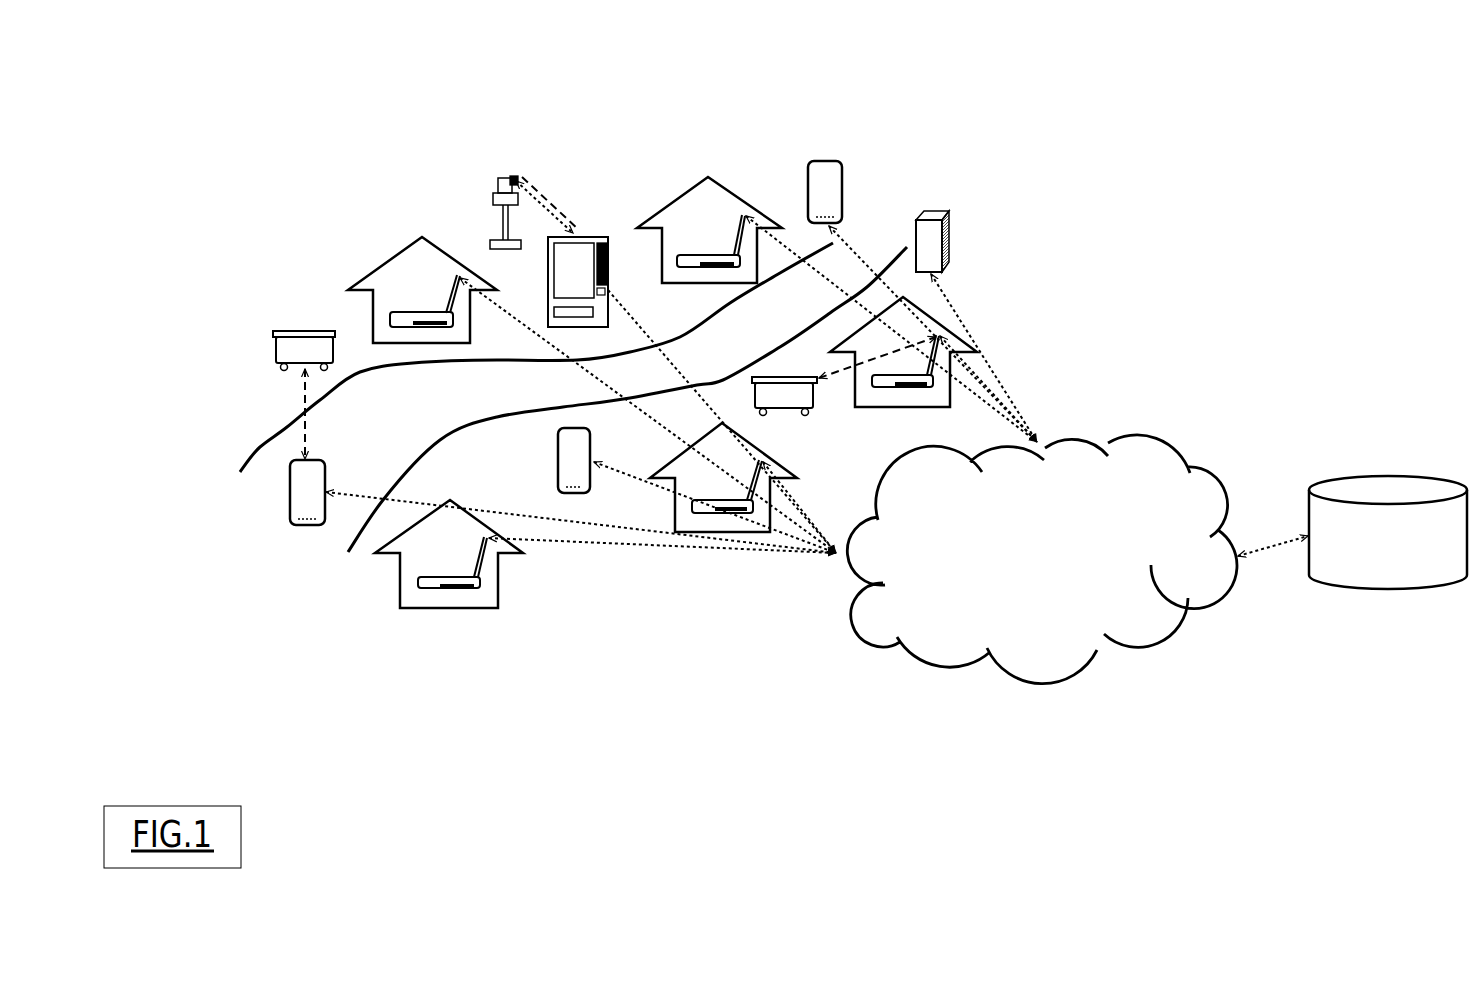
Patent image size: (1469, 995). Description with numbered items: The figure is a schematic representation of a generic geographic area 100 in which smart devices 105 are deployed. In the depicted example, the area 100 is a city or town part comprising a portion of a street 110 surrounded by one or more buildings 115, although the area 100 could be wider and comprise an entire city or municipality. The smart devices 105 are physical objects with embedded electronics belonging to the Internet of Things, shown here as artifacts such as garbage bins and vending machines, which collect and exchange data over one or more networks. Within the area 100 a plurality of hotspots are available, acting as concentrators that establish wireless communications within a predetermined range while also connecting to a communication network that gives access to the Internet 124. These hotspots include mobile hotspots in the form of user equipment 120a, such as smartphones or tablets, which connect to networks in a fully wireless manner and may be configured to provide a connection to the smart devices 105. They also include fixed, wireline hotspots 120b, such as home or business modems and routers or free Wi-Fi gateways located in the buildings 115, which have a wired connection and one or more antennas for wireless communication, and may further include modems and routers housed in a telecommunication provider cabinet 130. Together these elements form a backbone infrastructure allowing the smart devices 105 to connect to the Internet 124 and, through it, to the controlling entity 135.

The area 100 is at (205, 78).
The smart devices 105 is at (274, 333).
The street 110 is at (288, 432).
The buildings 115 is at (443, 347).
The user equipment 120a is at (292, 470).
The wireline hotspots 120b is at (495, 185).
The Internet 124 is at (1180, 446).
The telecommunication provider cabinet 130 is at (948, 213).
The controlling entity 135 is at (1350, 478).